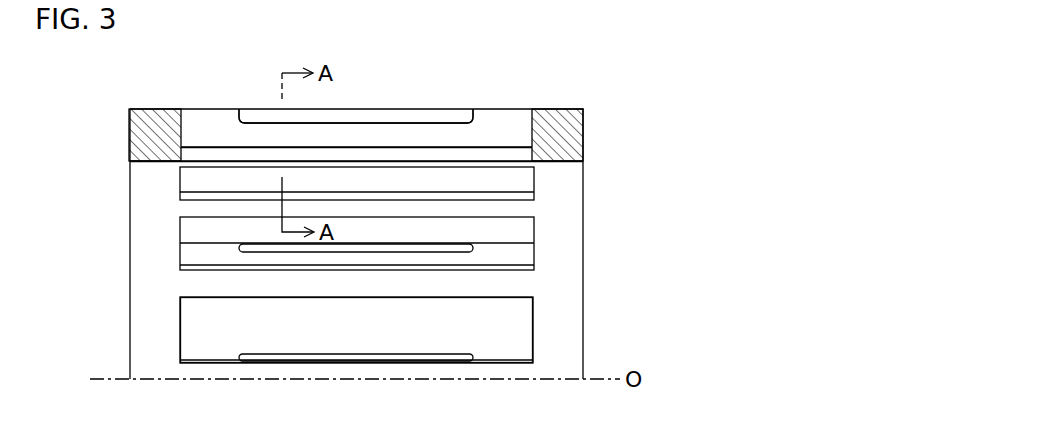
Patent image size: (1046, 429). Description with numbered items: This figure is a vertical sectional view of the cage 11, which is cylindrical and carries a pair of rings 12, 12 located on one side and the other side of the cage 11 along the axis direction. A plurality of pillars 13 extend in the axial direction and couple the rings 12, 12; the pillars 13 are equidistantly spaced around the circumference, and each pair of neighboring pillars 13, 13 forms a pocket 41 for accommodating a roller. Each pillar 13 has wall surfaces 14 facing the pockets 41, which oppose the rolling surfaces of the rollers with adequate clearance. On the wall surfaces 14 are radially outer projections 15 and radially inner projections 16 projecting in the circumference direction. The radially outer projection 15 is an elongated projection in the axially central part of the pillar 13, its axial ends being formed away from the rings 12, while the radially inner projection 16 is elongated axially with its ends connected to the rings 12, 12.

The cage 11 is at (585, 231).
The ring 12 is at (152, 107).
The pillar 13 is at (503, 128).
The wall surface 14 is at (364, 135).
The radially outer projection 15 is at (440, 115).
The radially inner projection 16 is at (402, 157).
The pocket 41 is at (513, 330).